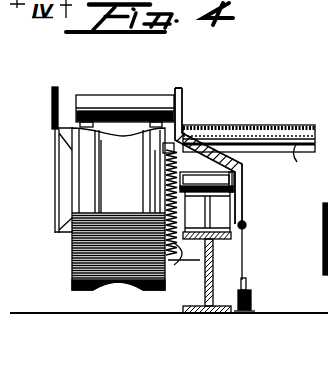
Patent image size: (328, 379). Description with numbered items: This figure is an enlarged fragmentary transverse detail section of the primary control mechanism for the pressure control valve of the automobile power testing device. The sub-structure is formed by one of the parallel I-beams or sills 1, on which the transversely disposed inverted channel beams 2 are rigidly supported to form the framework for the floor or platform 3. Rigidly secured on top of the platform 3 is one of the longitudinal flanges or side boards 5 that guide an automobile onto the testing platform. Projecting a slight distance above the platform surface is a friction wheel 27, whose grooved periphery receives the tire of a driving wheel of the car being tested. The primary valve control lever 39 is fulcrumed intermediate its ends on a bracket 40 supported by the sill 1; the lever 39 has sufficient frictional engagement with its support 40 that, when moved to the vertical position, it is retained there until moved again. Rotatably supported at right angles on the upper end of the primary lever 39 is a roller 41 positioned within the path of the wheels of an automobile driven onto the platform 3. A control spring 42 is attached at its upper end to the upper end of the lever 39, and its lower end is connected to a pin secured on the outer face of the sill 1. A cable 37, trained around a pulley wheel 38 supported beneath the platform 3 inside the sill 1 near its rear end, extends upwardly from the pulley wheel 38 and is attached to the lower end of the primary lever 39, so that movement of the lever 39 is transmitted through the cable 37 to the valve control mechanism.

The I-beam or sill 1 is at (208, 276).
The inverted channel beam 2 is at (300, 159).
The floor or platform 3 is at (277, 125).
The flange or side board 5 is at (52, 97).
The friction wheel 27 is at (95, 170).
The cable 37 is at (245, 256).
The pulley wheel 38 is at (248, 295).
The primary valve control lever 39 is at (200, 148).
The bracket 40 is at (207, 215).
The roller 41 is at (135, 100).
The control spring 42 is at (181, 217).